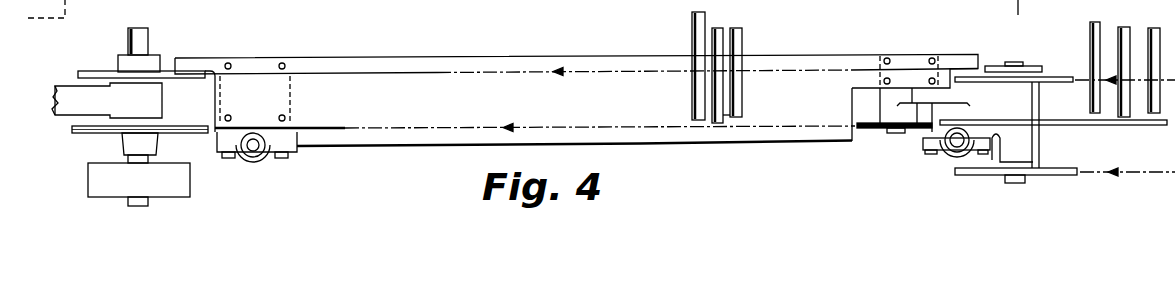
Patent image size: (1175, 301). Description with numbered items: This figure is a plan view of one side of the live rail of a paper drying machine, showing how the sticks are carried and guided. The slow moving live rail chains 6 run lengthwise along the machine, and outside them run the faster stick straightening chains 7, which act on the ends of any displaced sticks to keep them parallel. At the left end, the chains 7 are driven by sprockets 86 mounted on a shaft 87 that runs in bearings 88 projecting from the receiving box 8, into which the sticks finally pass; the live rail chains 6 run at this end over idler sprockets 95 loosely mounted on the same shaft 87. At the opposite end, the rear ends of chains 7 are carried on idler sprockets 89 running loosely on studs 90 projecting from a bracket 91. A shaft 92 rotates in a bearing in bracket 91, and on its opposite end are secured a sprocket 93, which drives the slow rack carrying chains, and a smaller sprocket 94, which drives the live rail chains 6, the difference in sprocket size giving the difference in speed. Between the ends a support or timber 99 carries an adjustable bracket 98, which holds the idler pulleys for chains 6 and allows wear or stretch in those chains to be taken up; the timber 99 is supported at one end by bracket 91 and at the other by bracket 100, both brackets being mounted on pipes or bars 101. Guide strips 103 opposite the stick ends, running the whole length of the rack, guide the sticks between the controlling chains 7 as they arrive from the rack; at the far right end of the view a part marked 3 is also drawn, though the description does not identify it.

The discs 3 is at (1143, 78).
The live rail chains 6 is at (505, 72).
The stick straightening chains 7 is at (465, 127).
The receiving box 8 is at (56, 94).
The sprockets 86 is at (72, 135).
The shaft 87 is at (140, 42).
The bearings 88 is at (107, 100).
The idler sprockets 89 is at (862, 130).
The studs 90 is at (895, 134).
The bracket 91 is at (970, 148).
The shaft 92 is at (1013, 62).
The sprocket 93 is at (1042, 83).
The sprocket 94 is at (1040, 67).
The idler sprockets 95 is at (92, 70).
The bracket 98 is at (1007, 88).
The timber 99 is at (602, 96).
The bracket 100 is at (272, 136).
The pipes or bars 101 is at (253, 145).
The guide strips 103 is at (1097, 125).